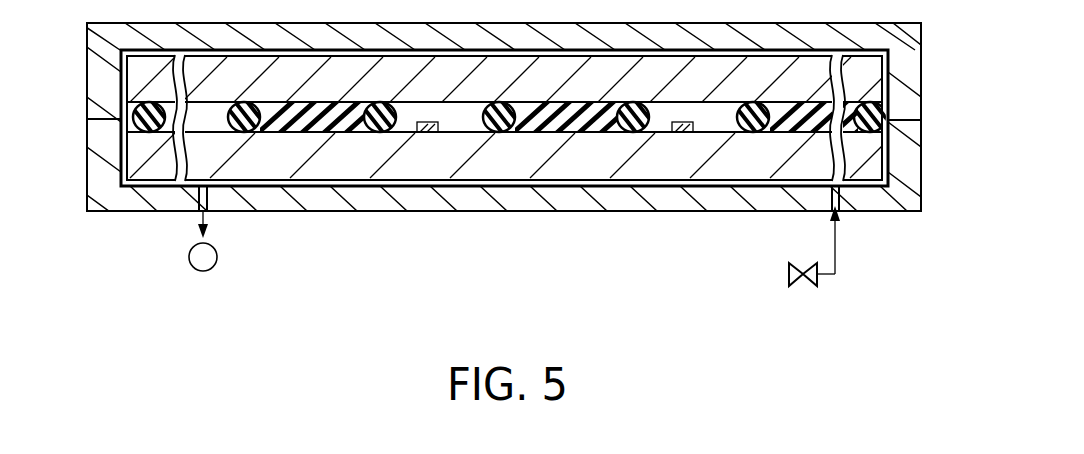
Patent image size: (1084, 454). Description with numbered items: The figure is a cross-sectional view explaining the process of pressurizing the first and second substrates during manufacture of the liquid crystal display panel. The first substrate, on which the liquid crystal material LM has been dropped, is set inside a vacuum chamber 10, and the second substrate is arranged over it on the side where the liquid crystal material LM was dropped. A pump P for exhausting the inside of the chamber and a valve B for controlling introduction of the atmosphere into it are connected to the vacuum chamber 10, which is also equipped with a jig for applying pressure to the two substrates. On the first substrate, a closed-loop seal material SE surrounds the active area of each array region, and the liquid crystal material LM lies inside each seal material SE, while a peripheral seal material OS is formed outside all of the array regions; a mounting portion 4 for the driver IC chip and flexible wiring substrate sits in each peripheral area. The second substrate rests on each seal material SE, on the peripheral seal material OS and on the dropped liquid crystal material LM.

The vacuum chamber 10 is at (86, 213).
The peripheral seal material OS is at (172, 150).
The seal material SE is at (238, 130).
The liquid crystal material LM is at (303, 125).
The mounting portion 4 is at (420, 125).
The pump P is at (203, 228).
The valve B is at (802, 288).